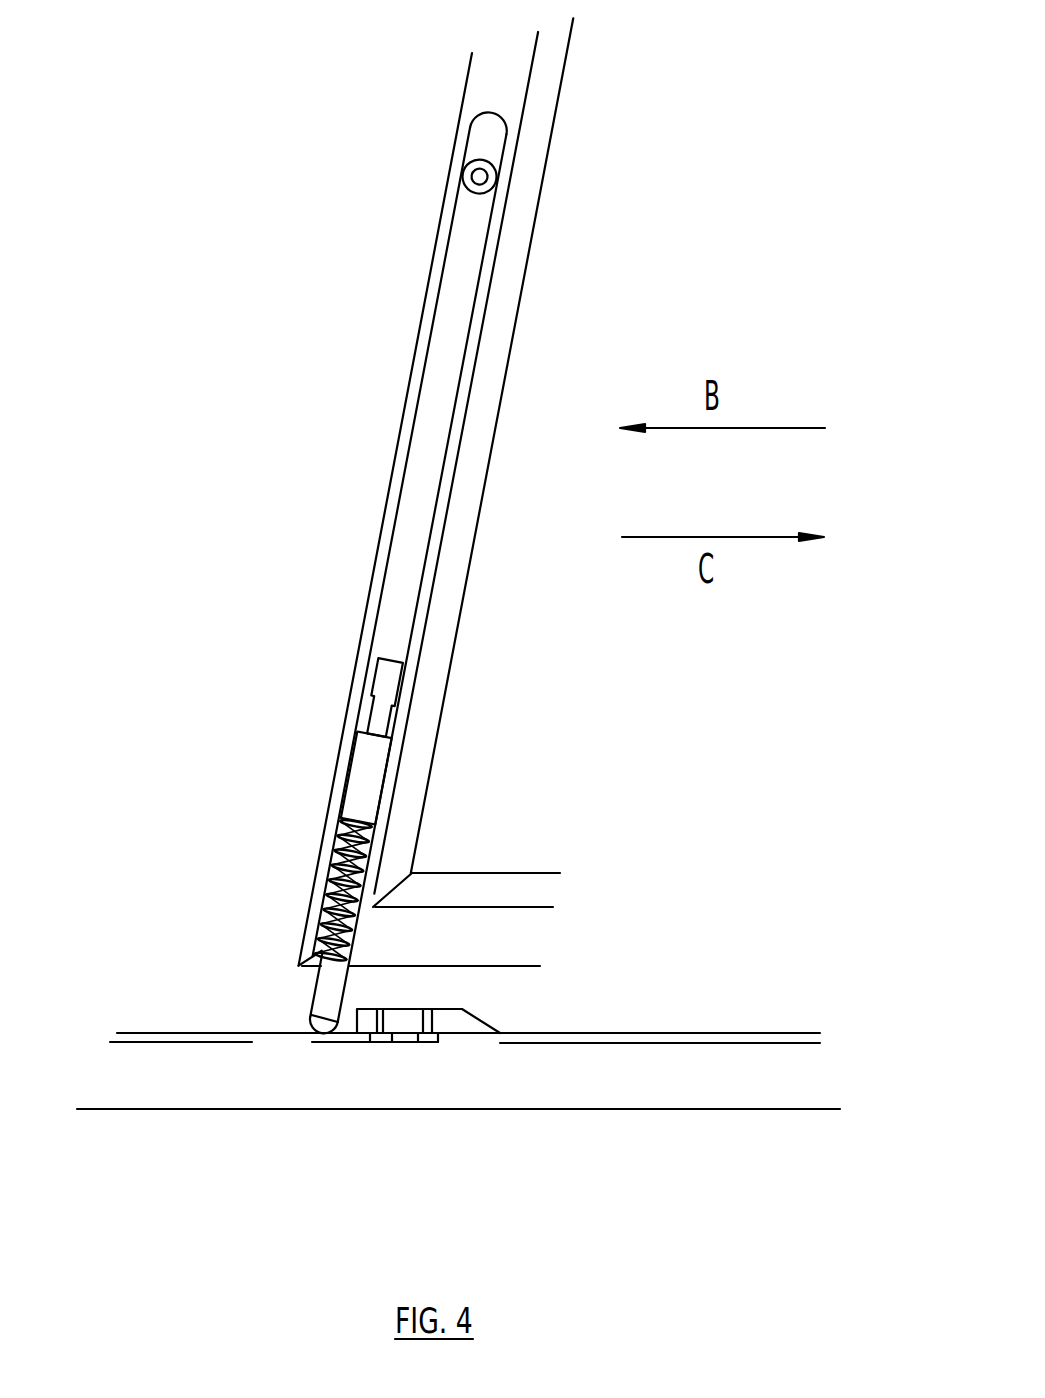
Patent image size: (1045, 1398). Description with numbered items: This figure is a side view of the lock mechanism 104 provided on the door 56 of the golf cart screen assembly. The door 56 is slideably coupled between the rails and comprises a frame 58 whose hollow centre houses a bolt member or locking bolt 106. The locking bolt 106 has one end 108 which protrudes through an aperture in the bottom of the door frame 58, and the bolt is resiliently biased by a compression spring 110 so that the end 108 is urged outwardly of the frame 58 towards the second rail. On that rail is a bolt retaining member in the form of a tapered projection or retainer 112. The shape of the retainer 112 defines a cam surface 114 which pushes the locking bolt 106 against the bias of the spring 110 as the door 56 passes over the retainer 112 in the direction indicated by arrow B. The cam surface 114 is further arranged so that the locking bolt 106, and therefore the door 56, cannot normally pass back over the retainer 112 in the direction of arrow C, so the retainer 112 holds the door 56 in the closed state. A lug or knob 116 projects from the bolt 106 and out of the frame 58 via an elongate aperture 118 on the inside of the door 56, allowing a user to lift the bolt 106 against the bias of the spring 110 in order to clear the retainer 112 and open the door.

The door 56 is at (568, 70).
The frame 58 is at (437, 262).
The lock mechanism 104 is at (483, 800).
The locking bolt 106 is at (352, 713).
The end of the locking bolt 108 is at (318, 986).
The compression spring 110 is at (333, 884).
The retainer 112 is at (461, 1040).
The cam surface 114 is at (483, 1022).
The knob 116 is at (481, 178).
The elongate aperture 118 is at (488, 128).